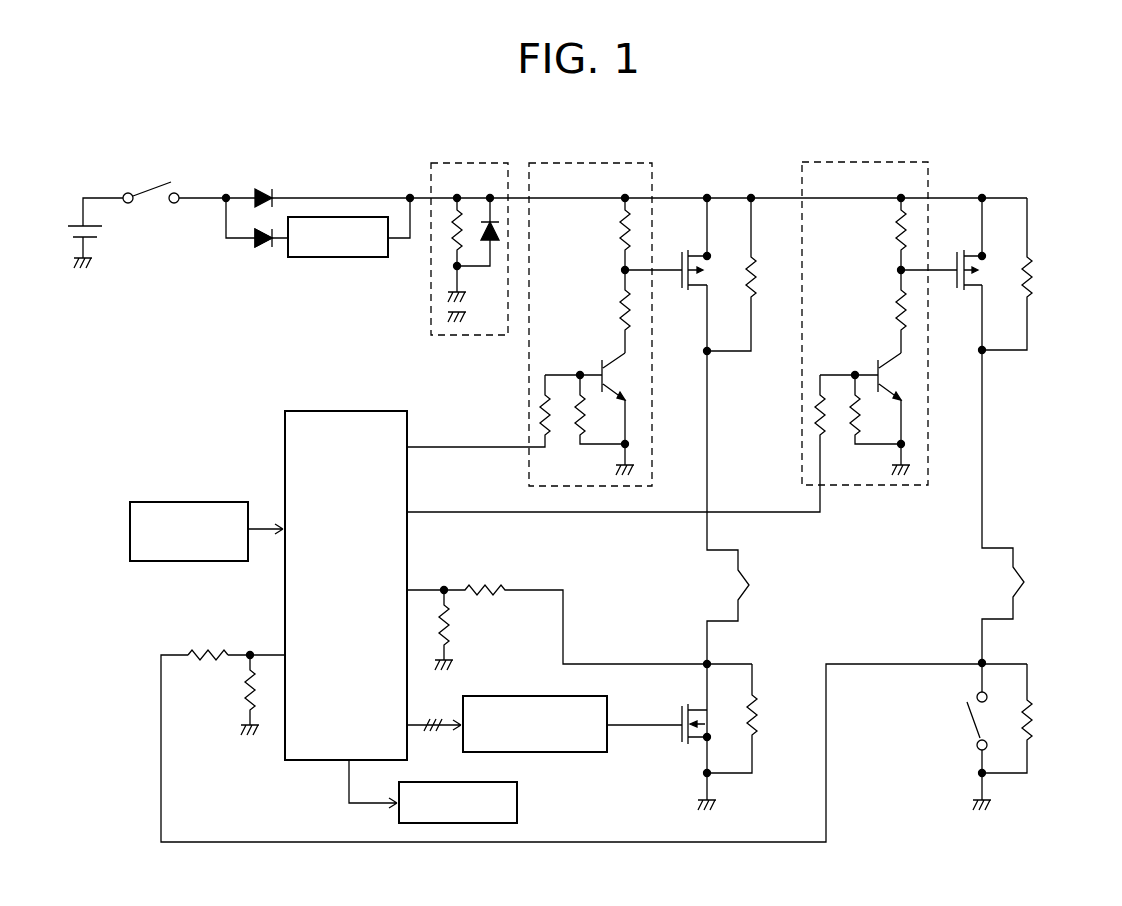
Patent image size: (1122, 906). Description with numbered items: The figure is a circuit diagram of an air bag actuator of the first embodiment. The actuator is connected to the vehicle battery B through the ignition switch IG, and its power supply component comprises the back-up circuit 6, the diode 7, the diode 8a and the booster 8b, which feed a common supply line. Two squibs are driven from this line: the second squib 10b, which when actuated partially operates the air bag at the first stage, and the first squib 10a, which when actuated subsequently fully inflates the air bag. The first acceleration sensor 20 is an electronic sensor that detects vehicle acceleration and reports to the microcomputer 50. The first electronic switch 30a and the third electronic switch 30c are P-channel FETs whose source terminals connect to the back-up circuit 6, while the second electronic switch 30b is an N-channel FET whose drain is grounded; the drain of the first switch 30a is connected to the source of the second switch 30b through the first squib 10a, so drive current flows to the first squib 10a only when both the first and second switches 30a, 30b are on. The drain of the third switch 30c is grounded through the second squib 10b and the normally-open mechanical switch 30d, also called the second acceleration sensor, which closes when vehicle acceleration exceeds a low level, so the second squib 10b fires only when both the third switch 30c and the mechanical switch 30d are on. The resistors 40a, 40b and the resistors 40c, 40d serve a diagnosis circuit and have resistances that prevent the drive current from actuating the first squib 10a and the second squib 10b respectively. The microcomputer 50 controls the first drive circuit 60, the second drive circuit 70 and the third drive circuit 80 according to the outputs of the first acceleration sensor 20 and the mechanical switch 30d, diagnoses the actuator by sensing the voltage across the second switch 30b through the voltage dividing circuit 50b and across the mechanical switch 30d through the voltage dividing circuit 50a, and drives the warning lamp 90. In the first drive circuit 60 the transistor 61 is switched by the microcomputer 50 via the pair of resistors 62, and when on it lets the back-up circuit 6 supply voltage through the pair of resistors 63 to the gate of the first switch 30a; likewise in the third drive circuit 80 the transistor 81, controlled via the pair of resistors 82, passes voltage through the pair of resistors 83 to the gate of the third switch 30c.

The vehicle battery B is at (62, 222).
The ignition switch IG is at (151, 180).
The back-up circuit 6 is at (460, 154).
The diode 7 is at (264, 188).
The diode 8a is at (263, 250).
The booster 8b is at (340, 258).
The first squib 10a is at (749, 584).
The second squib 10b is at (1021, 584).
The first acceleration sensor 20 is at (188, 502).
The first electronic switch 30a is at (675, 255).
The second electronic switch 30b is at (677, 711).
The third electronic switch 30c is at (951, 255).
The mechanical switch 30d is at (965, 730).
The resistor 40a is at (761, 272).
The resistor 40b is at (762, 720).
The resistor 40c is at (1032, 272).
The resistor 40d is at (1034, 722).
The microcomputer 50 is at (334, 411).
The voltage dividing circuit 50a is at (214, 724).
The voltage dividing circuit 50b is at (461, 586).
The first drive circuit 60 is at (575, 154).
The transistor 61 is at (630, 372).
The pair of resistors 62 is at (571, 427).
The pair of resistors 63 is at (616, 228).
The second drive circuit 70 is at (522, 696).
The third drive circuit 80 is at (848, 154).
The transistor 81 is at (907, 372).
The pair of resistors 82 is at (849, 427).
The pair of resistors 83 is at (890, 228).
The warning lamp 90 is at (517, 803).